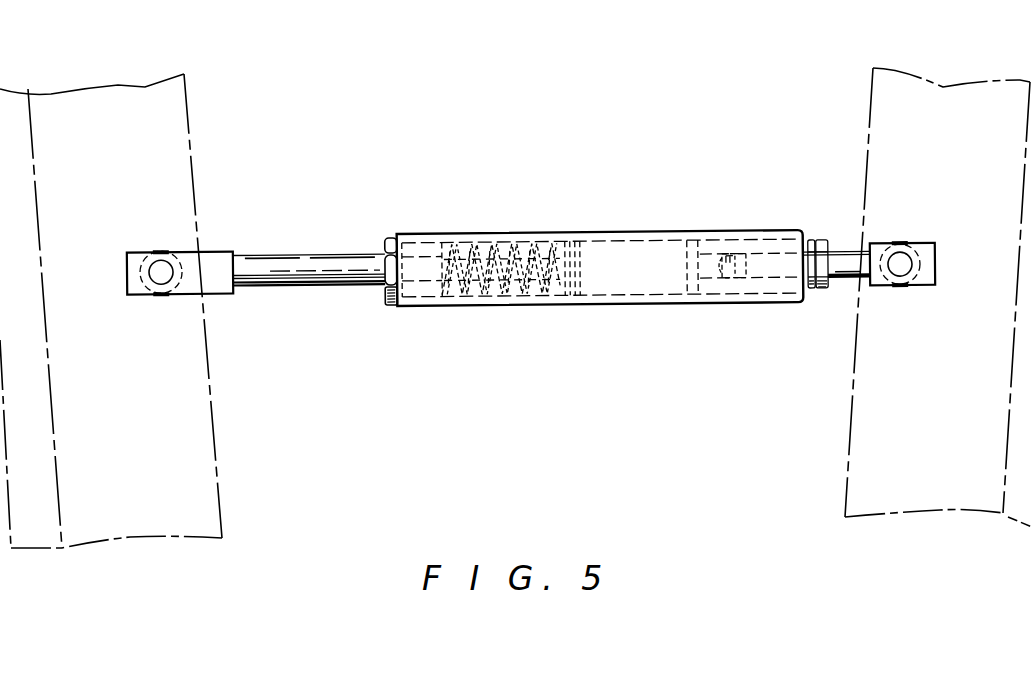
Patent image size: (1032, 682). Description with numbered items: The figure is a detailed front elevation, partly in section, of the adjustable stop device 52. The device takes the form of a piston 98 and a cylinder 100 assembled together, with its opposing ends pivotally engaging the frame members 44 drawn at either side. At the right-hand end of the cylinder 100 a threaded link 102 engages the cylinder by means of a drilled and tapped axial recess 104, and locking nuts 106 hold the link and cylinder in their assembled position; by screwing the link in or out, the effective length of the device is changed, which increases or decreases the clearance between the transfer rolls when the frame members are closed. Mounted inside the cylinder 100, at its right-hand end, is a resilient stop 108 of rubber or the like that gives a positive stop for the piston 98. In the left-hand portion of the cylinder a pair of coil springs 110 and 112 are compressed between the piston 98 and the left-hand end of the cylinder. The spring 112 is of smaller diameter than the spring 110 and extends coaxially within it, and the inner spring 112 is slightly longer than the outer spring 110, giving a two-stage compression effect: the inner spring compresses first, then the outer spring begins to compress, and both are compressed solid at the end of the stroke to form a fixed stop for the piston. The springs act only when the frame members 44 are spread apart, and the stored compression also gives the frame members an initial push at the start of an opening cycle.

The frame members 44 is at (203, 492).
The adjustable stop device 52 is at (602, 313).
The piston 98 is at (578, 238).
The cylinder 100 is at (682, 232).
The threaded link 102 is at (852, 250).
The drilled and tapped axial recess 104 is at (740, 252).
The locking nuts 106 is at (822, 242).
The partition 108 is at (685, 302).
The coil spring 110 is at (490, 248).
The coil spring 112 is at (536, 248).